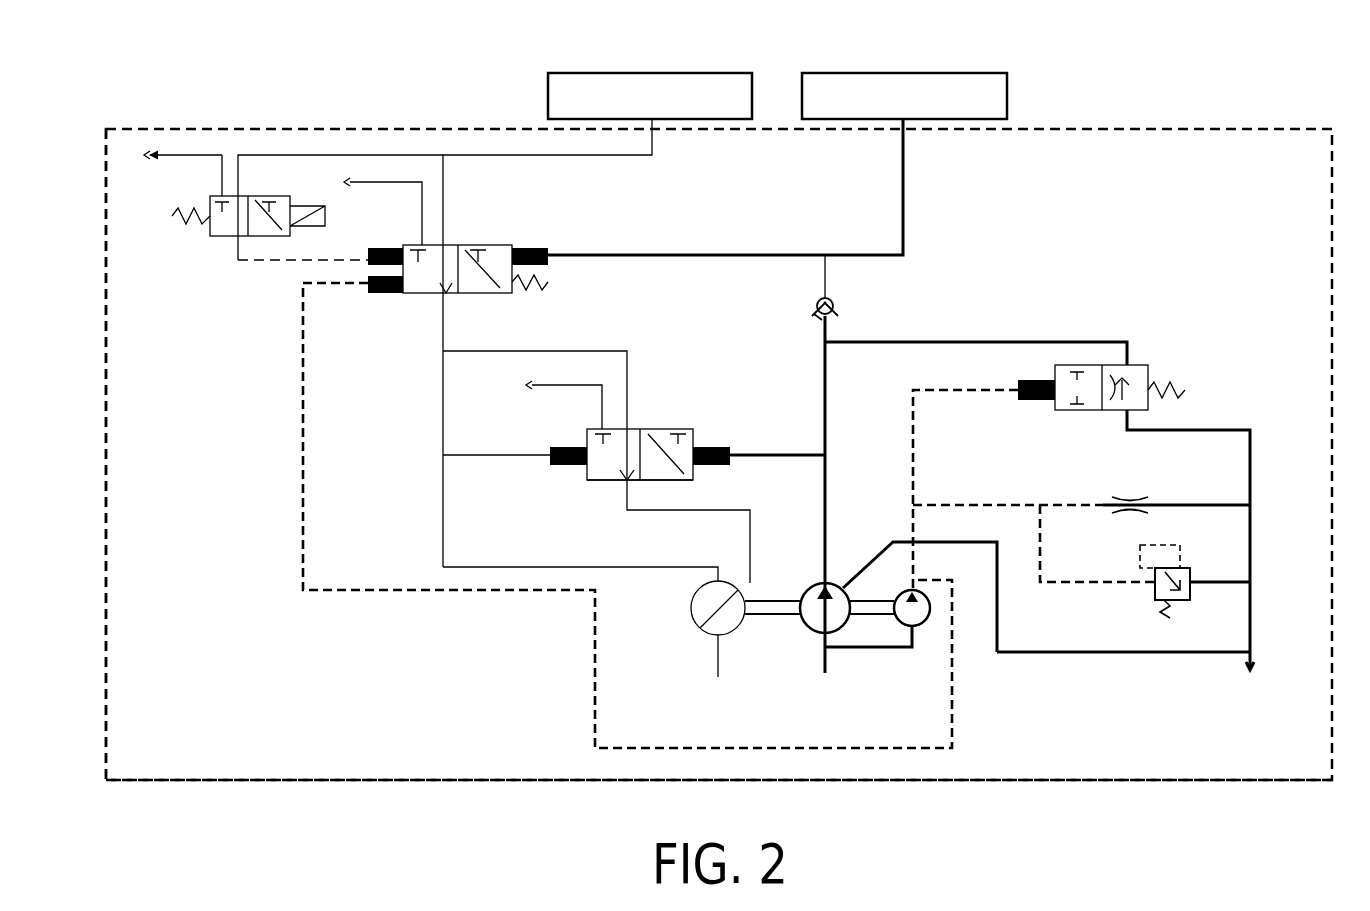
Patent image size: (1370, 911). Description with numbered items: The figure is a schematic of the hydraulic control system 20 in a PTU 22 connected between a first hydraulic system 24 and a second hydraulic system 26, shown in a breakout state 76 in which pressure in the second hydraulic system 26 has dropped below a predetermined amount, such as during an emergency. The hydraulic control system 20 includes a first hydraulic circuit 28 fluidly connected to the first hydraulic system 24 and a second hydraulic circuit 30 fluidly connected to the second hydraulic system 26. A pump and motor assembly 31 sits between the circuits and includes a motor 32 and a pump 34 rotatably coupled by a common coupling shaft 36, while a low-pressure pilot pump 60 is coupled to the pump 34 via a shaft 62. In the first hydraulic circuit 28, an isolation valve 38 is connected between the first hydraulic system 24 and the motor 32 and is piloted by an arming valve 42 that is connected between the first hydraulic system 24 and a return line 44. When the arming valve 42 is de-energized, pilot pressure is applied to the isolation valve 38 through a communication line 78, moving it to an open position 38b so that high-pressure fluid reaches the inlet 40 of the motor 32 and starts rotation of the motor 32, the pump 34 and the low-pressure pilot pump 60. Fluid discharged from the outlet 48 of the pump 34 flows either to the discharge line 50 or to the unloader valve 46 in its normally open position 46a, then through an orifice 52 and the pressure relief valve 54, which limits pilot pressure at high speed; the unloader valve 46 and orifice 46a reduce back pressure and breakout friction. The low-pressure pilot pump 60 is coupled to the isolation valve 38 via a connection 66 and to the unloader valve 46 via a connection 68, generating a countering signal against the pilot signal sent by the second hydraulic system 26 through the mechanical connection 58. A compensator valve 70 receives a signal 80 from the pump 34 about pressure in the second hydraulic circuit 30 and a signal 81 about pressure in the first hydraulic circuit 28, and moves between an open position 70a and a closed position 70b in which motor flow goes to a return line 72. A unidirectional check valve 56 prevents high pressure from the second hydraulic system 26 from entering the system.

The hydraulic control system 20 is at (90, 454).
The PTU 22 is at (689, 442).
The first hydraulic system 24 is at (608, 77).
The second hydraulic system 26 is at (946, 72).
The first hydraulic circuit 28 is at (445, 314).
The second hydraulic circuit 30 is at (1210, 473).
The pump and motor assembly 31 is at (795, 680).
The motor 32 is at (679, 629).
The pump 34 is at (834, 648).
The common coupling shaft 36 is at (756, 671).
The isolation valve 38 is at (446, 286).
The open position 38b is at (424, 332).
The inlet 40 is at (580, 586).
The arming valve 42 is at (248, 268).
The return line 44 is at (180, 115).
The unloader valve 46 is at (1039, 467).
The orifice 46a is at (1177, 359).
The outlet 48 is at (912, 575).
The discharge line 50 is at (862, 494).
The orifice 52 is at (1044, 474).
The pressure relief valve 54 is at (1145, 568).
The check valve 56 is at (876, 287).
The mechanical connection 58 is at (725, 187).
The low-pressure pilot pump 60 is at (909, 618).
The shaft 62 is at (893, 672).
The connection 66 is at (627, 515).
The connection 68 is at (974, 431).
The compensator valve 70 is at (568, 471).
The open position 70a is at (584, 518).
The closed position 70b is at (698, 490).
The return line 72 is at (596, 467).
The breakout state 76 is at (704, 833).
The communication line 78 is at (303, 310).
The signal 80 is at (759, 424).
The signal 81 is at (563, 431).